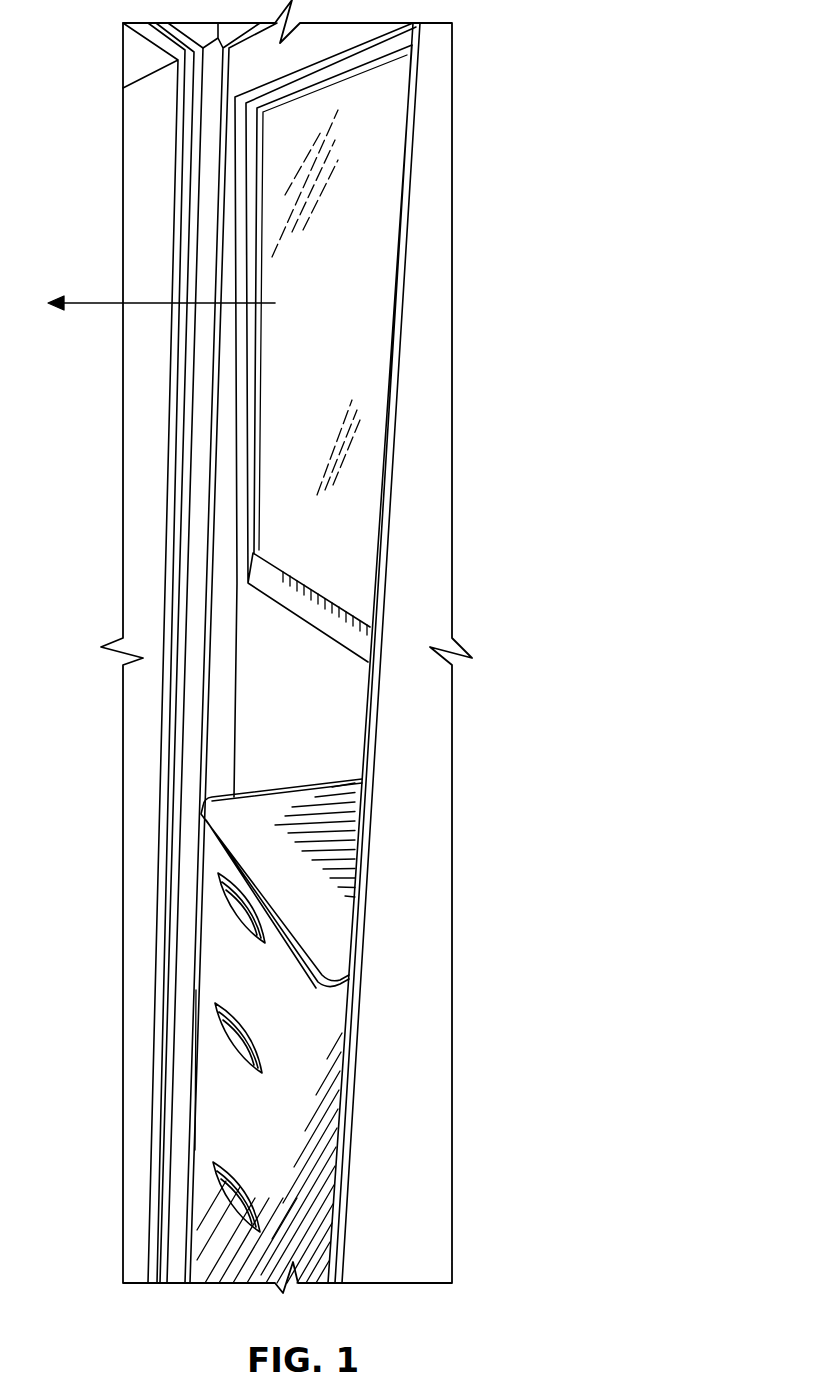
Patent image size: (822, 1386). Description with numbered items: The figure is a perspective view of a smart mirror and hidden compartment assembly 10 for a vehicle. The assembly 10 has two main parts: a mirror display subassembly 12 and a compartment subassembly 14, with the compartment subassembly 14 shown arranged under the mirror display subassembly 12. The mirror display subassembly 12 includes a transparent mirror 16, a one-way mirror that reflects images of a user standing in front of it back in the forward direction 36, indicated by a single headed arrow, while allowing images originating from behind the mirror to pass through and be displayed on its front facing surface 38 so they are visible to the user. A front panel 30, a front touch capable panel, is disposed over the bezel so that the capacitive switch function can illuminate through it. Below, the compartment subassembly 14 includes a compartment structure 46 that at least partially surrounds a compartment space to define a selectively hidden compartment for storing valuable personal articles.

The mirror and hidden compartment assembly 10 is at (148, 410).
The mirror display subassembly 12 is at (283, 423).
The compartment subassembly 14 is at (274, 794).
The transparent mirror 16 is at (275, 270).
The front panel 30 is at (313, 607).
The forward direction 36 is at (87, 305).
The front facing surface 38 is at (380, 262).
The compartment structure 46 is at (280, 680).